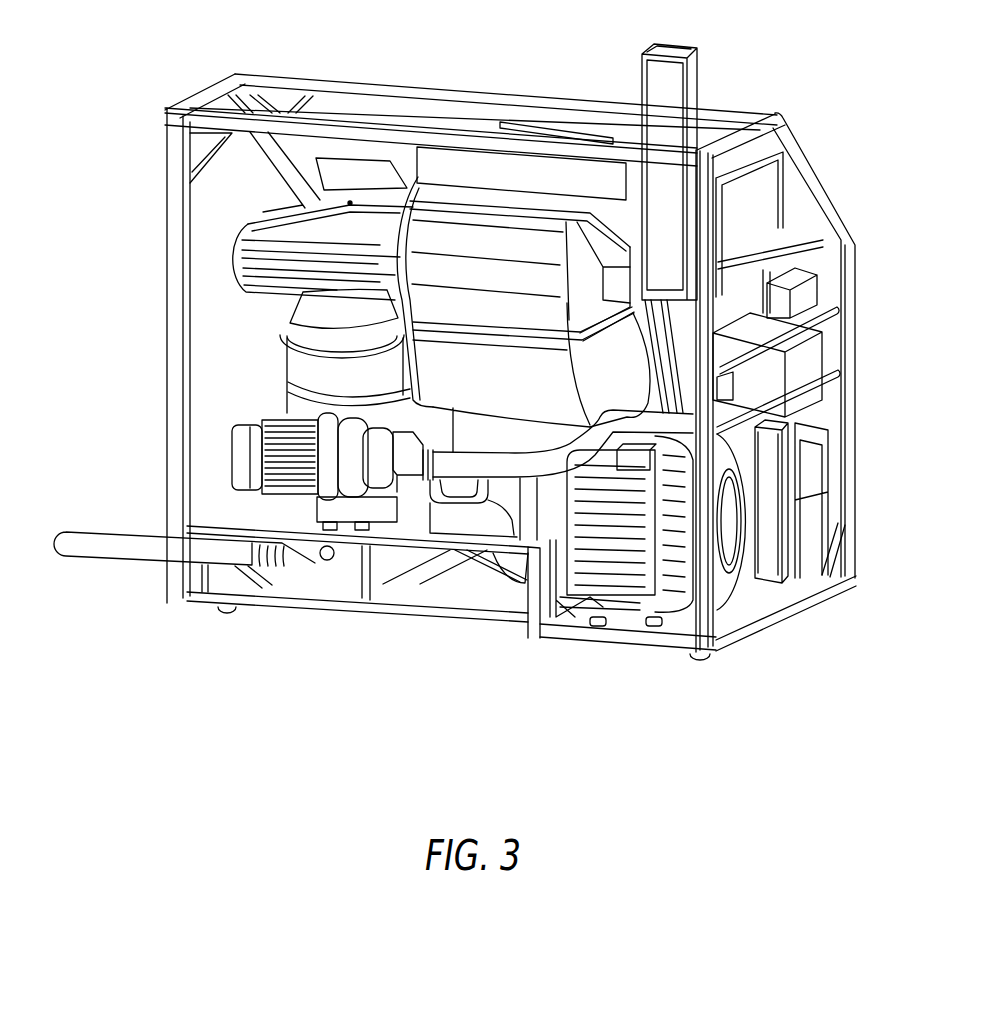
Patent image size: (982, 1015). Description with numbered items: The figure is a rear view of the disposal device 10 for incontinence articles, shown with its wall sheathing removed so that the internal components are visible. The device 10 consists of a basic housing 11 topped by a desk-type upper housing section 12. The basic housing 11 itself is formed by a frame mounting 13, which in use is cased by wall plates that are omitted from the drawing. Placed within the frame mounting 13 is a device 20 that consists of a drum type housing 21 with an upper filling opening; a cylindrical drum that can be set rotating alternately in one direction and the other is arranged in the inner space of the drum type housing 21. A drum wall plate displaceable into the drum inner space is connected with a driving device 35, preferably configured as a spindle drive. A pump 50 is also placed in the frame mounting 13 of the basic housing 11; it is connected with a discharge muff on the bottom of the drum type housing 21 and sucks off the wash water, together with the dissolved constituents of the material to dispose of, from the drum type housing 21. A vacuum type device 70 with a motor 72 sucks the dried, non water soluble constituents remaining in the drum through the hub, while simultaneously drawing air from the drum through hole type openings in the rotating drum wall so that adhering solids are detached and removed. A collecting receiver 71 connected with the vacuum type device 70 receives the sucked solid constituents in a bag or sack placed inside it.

The disposal device 10 is at (148, 258).
The basic housing 11 is at (302, 78).
The desk-type upper housing section 12 is at (823, 208).
The frame mounting 13 is at (175, 431).
The device 20 is at (458, 236).
The drum type housing 21 is at (547, 223).
The driving device 35 is at (257, 280).
The pump 50 is at (232, 460).
The vacuum type device 70 is at (610, 538).
The collecting receiver 71 is at (298, 370).
The motor 72 is at (733, 593).